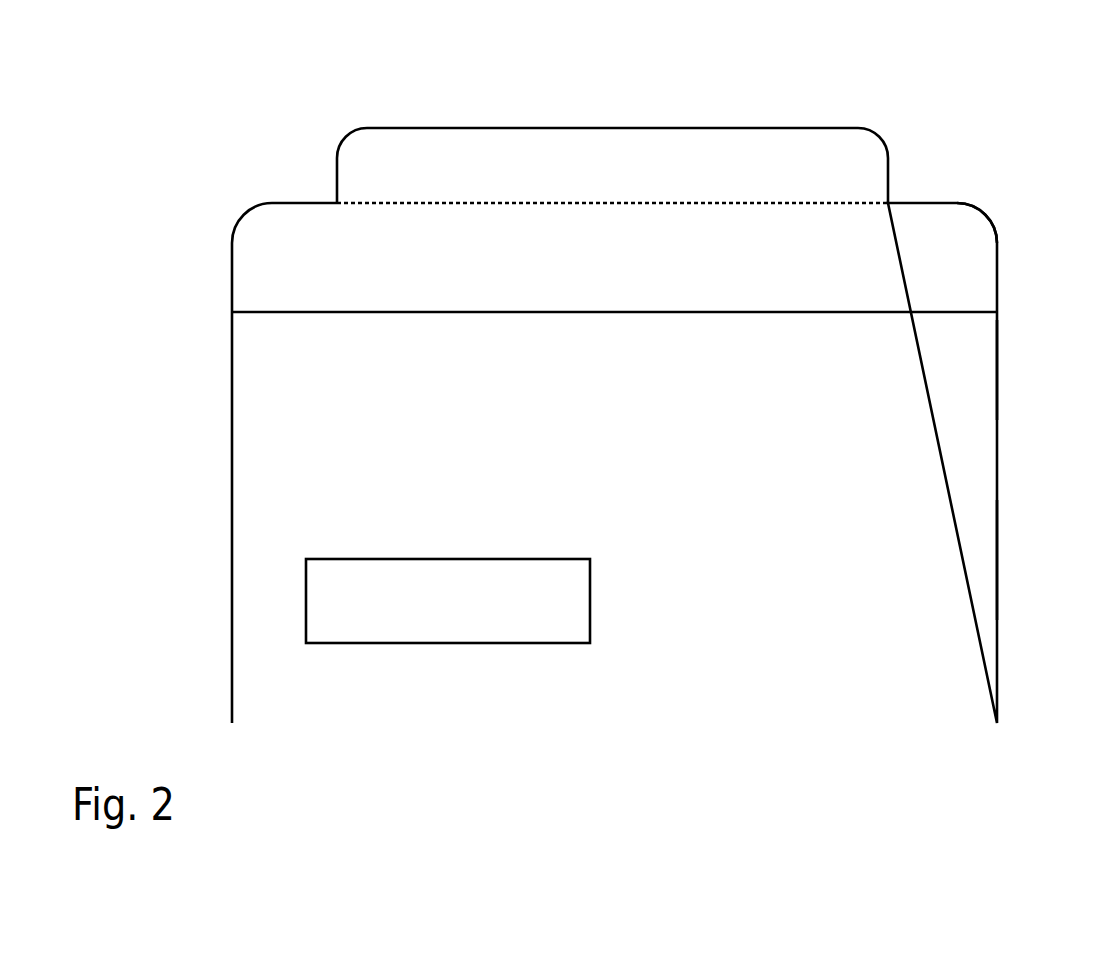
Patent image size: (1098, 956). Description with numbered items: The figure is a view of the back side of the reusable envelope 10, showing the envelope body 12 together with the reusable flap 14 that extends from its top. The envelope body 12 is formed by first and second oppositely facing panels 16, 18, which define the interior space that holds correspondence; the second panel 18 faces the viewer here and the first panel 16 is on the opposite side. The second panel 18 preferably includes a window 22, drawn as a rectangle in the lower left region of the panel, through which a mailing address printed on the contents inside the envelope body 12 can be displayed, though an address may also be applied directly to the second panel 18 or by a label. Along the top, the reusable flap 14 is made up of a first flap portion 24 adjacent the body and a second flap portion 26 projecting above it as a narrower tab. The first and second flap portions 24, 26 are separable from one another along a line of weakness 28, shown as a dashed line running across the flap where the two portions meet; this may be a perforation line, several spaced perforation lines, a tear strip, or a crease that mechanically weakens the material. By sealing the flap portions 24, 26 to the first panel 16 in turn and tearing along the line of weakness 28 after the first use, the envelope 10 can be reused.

The envelope 10 is at (653, 438).
The envelope body 12 is at (952, 644).
The reusable flap 14 is at (922, 216).
The first panel 16 is at (997, 353).
The second panel 18 is at (973, 563).
The window 22 is at (382, 627).
The first flap portion 24 is at (967, 272).
The second flap portion 26 is at (812, 158).
The line of weakness 28 is at (552, 200).